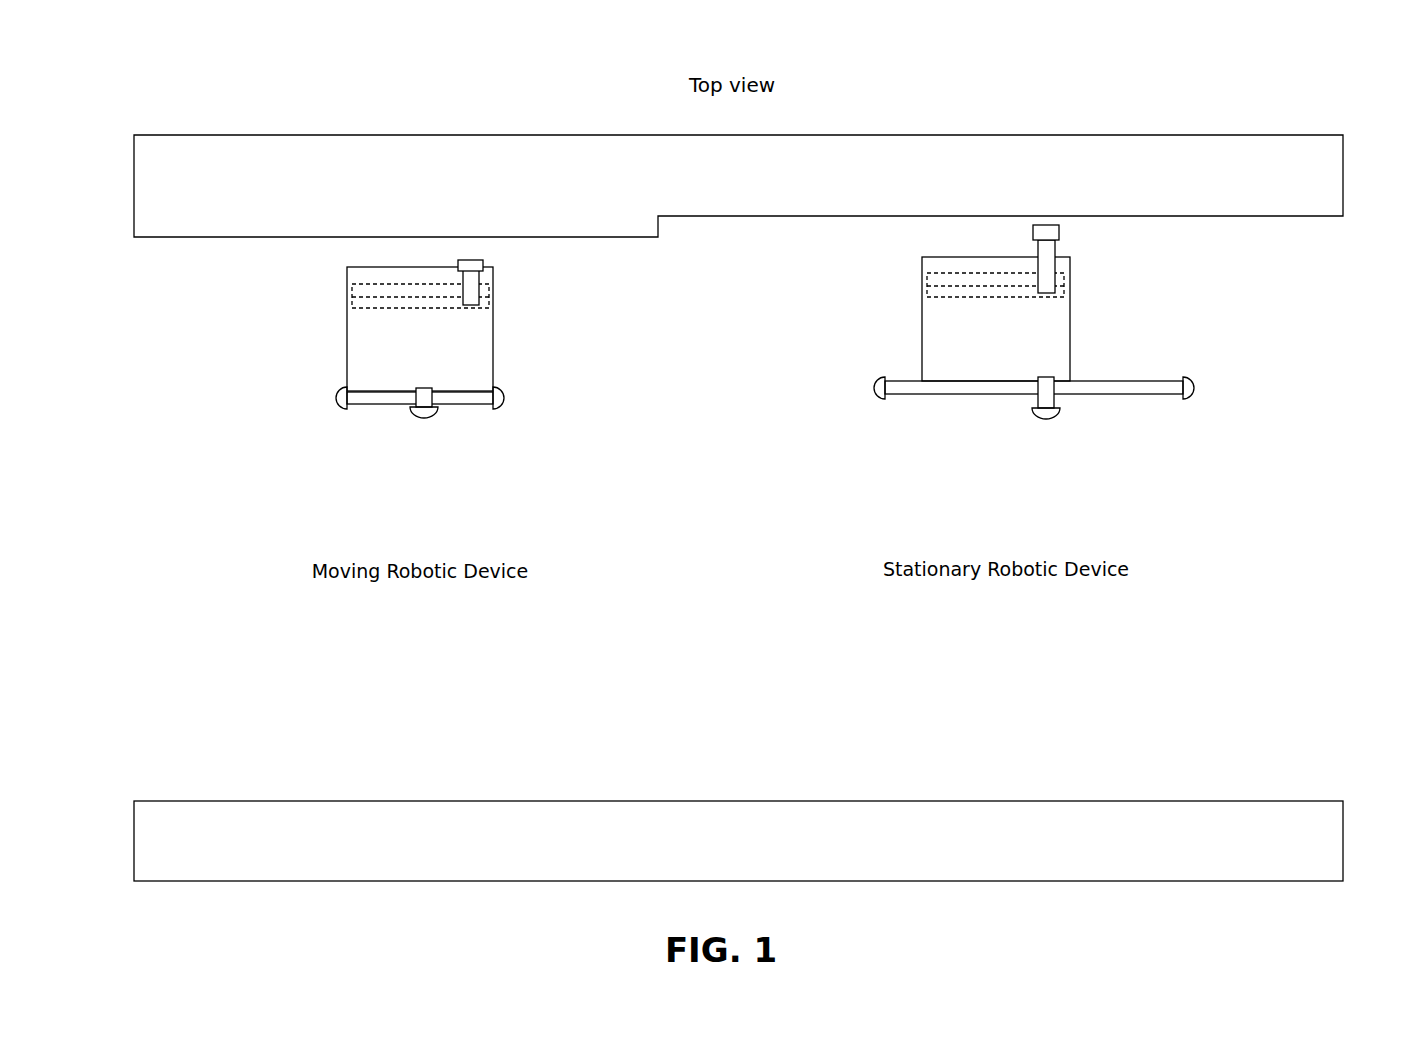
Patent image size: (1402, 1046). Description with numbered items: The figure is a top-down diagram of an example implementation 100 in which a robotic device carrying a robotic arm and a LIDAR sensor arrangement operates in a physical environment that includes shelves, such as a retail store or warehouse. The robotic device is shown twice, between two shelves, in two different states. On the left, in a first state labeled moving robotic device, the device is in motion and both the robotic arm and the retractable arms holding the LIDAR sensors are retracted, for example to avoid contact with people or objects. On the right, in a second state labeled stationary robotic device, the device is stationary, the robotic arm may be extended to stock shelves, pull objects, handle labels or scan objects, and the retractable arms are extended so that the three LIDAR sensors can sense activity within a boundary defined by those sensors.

The example implementation 100 is at (235, 67).